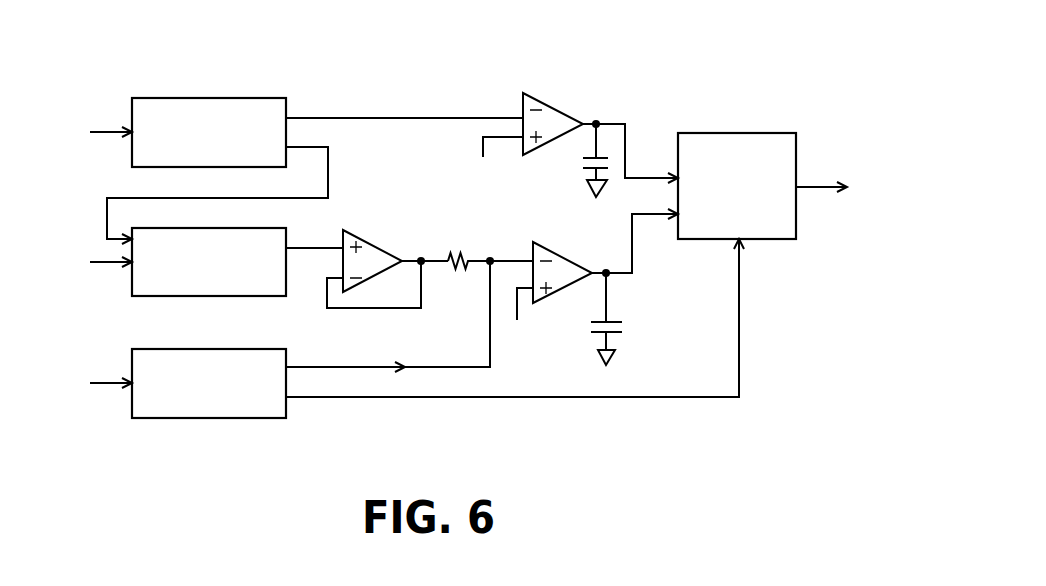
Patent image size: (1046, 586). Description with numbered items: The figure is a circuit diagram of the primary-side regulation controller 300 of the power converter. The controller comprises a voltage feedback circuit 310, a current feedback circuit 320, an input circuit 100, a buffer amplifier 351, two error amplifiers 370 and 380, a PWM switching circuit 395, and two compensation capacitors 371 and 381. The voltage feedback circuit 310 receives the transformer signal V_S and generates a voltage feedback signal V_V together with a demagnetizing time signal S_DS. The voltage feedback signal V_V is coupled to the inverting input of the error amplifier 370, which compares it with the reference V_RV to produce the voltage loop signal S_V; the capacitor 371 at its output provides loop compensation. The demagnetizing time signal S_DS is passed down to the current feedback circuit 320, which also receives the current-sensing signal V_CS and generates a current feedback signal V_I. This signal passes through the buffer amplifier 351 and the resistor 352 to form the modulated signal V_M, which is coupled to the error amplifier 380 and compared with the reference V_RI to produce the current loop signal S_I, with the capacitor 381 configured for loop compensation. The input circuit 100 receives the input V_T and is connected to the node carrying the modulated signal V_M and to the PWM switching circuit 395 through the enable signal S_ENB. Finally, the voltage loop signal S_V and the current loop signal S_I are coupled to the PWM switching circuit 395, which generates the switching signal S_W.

The primary-side regulation controller 300 is at (882, 30).
The voltage feedback circuit 310 is at (132, 167).
The current feedback circuit 320 is at (132, 283).
The input circuit 100 is at (132, 405).
The buffer amplifier 351 is at (377, 243).
The resistor 352 is at (458, 270).
The error amplifier 370 is at (555, 117).
The capacitor 371 is at (583, 158).
The error amplifier 380 is at (567, 260).
The capacitor 381 is at (613, 318).
The PWM switching circuit 395 is at (735, 132).